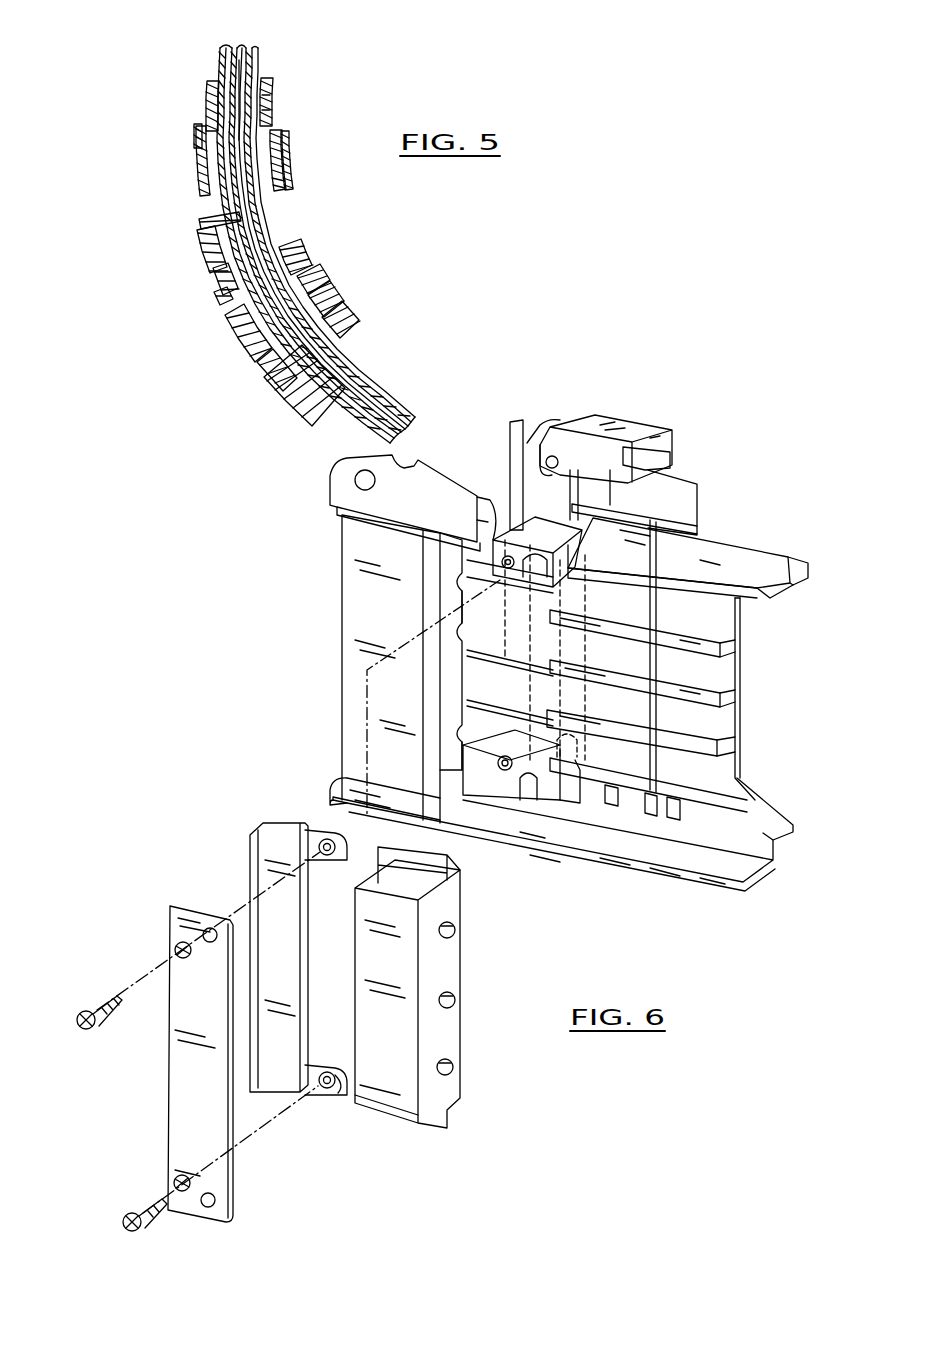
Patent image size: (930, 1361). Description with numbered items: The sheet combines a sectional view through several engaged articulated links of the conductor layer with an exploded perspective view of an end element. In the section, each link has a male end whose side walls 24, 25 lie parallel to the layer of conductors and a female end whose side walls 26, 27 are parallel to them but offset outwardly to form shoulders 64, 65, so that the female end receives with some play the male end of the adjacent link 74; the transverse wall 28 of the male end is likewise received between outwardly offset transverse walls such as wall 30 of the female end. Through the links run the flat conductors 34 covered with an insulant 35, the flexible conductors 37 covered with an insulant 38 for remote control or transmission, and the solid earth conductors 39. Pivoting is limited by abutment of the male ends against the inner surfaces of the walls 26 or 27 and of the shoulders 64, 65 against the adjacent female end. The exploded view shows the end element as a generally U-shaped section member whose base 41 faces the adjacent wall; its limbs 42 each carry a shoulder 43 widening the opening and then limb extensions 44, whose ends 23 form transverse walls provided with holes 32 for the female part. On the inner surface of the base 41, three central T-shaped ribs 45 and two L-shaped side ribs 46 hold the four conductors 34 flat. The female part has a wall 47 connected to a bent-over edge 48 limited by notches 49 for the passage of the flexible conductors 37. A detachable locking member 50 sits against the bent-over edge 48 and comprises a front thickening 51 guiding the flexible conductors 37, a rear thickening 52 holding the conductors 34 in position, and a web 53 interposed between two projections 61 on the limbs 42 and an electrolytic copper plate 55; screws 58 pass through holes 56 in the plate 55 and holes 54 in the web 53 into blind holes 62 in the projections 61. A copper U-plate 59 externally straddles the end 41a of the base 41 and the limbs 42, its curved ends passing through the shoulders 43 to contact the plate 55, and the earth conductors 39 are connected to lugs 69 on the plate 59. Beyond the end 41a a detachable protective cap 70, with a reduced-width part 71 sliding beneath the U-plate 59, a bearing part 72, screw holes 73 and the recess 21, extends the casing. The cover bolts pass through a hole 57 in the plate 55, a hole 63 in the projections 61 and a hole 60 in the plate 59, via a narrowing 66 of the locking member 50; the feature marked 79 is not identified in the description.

In FIG. 6, the recess 21 is at (558, 423).
In FIG. 6, the ends of the limb extensions 23 is at (333, 490).
In FIG. 5, the side wall 24 is at (208, 100).
In FIG. 5, the side wall 25 is at (273, 102).
In FIG. 5, the side wall 26 is at (195, 150).
In FIG. 5, the side wall 27 is at (293, 162).
In FIG. 5, the transverse wall 28 is at (273, 78).
In FIG. 5, the transverse wall 30 is at (199, 200).
In FIG. 6, the holes 32 is at (365, 480).
In FIG. 5, the flat conductor 34 is at (227, 50).
In FIG. 6, the flat conductor 34 is at (658, 615).
In FIG. 5, the insulant 35 is at (220, 56).
In FIG. 5, the flexible conductor 37 is at (249, 50).
In FIG. 5, the insulant 38 is at (261, 62).
In FIG. 6, the solid conductor 39 is at (500, 530).
In FIG. 6, the base 41 is at (740, 708).
In FIG. 6, the end of the base 41a is at (557, 690).
In FIG. 6, the limbs 42 is at (800, 560).
In FIG. 6, the shoulder 43 is at (777, 583).
In FIG. 6, the limb extensions 44 is at (743, 577).
In FIG. 6, the central T-shaped ribs 45 is at (727, 663).
In FIG. 6, the L-shaped side ribs 46 is at (740, 610).
In FIG. 6, the wall 47 is at (380, 680).
In FIG. 6, the bent-over edge 48 is at (453, 697).
In FIG. 6, the notches 49 is at (460, 733).
In FIG. 6, the detachable locking member 50 is at (372, 1122).
In FIG. 6, the front thickening 51 is at (408, 1100).
In FIG. 6, the rear thickening 52 is at (280, 1063).
In FIG. 6, the web 53 is at (340, 1088).
In FIG. 6, the holes 54 is at (322, 842).
In FIG. 6, the electrolytic copper plate 55 is at (178, 1105).
In FIG. 6, the holes 56 is at (178, 945).
In FIG. 6, the hole 57 is at (212, 930).
In FIG. 6, the screws 58 is at (86, 1010).
In FIG. 6, the U-plate 59 is at (520, 517).
In FIG. 6, the hole 60 is at (572, 470).
In FIG. 6, the projections 61 is at (497, 583).
In FIG. 6, the blind holes 62 is at (500, 546).
In FIG. 6, the hole 63 is at (487, 603).
In FIG. 5, the shoulder 64 is at (194, 127).
In FIG. 5, the shoulder 65 is at (284, 128).
In FIG. 6, the narrowing 66 is at (360, 860).
In FIG. 6, the lugs 69 is at (493, 533).
In FIG. 6, the protective cap 70 is at (633, 418).
In FIG. 6, the reduced-width part 71 is at (687, 507).
In FIG. 6, the bearing part 72 is at (517, 440).
In FIG. 6, the holes 73 is at (550, 457).
In FIG. 5, the articulated link 74 is at (388, 357).
In FIG. 6, the hole 79 is at (452, 935).